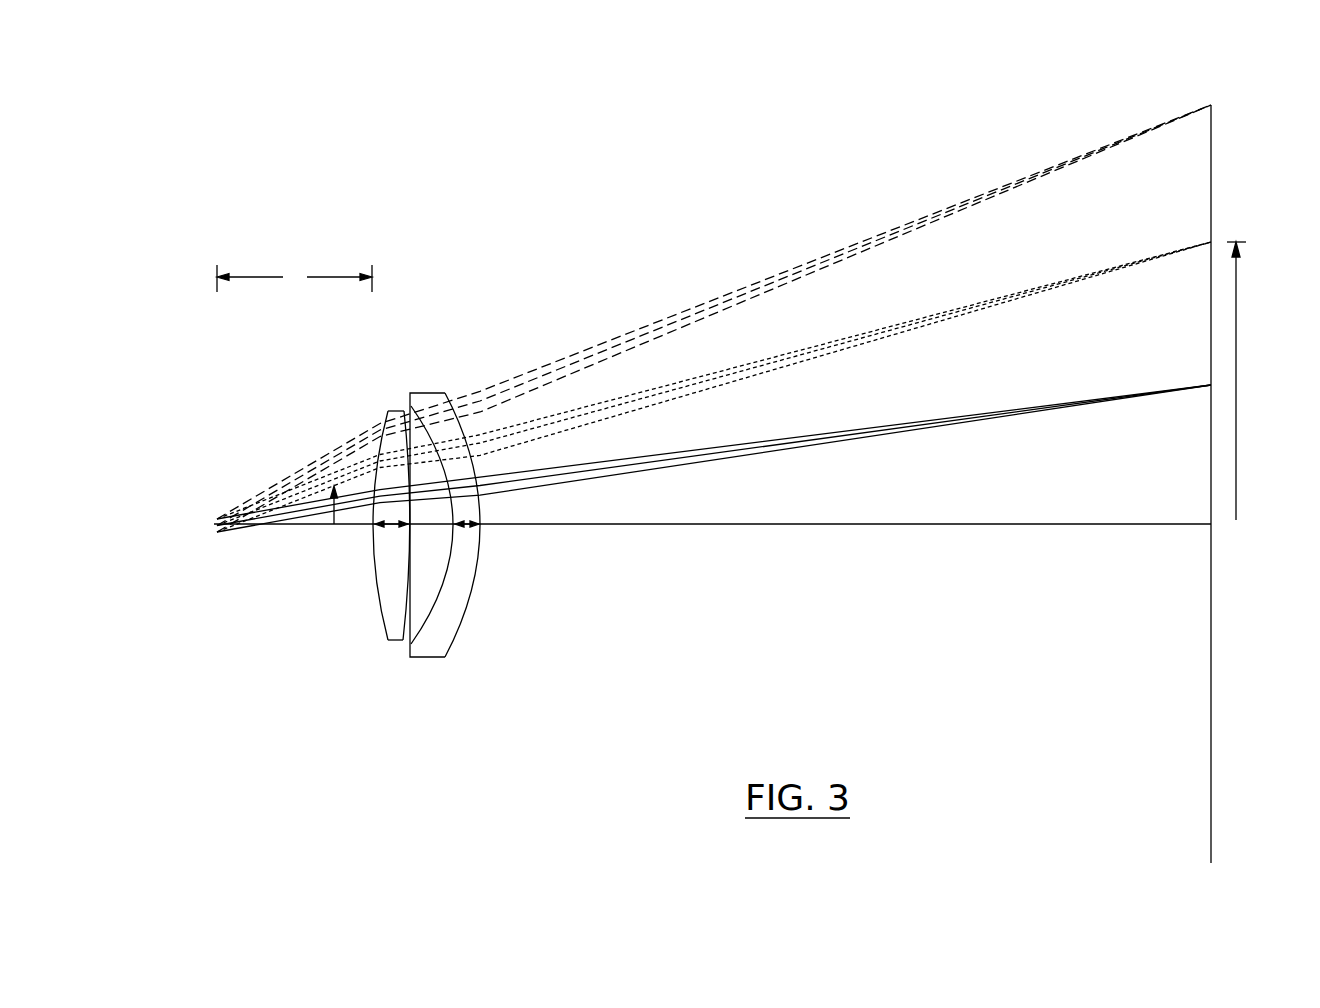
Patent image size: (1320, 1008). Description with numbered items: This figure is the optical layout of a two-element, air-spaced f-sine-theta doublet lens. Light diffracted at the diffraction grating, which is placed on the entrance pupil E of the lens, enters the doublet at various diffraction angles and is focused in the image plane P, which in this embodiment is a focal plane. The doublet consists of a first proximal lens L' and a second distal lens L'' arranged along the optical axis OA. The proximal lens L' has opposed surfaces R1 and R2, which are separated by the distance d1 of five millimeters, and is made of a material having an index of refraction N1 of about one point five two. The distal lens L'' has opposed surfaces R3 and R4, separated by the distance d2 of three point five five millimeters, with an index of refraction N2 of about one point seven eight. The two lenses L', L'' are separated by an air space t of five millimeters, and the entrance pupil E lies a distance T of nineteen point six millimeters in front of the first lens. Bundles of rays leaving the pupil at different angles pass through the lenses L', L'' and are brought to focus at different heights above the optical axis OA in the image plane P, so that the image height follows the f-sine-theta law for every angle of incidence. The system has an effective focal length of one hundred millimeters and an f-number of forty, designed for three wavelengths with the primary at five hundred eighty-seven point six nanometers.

The image plane P is at (1213, 147).
The distance from entrance pupil to first lens T is at (294, 280).
The entrance pupil E is at (215, 524).
The optical axis OA is at (902, 524).
The first proximal lens L' is at (316, 541).
The second distal lens L'' is at (471, 544).
The first surface of first lens R1 is at (377, 596).
The second surface of first lens R2 is at (402, 630).
The index of refraction of first lens N1 is at (335, 677).
The first surface of second lens R3 is at (427, 657).
The second surface of second lens R4 is at (453, 643).
The index of refraction of second lens N2 is at (460, 592).
The thickness of first lens d1 is at (390, 530).
The thickness of second lens d2 is at (467, 529).
The air space between lenses t is at (452, 548).